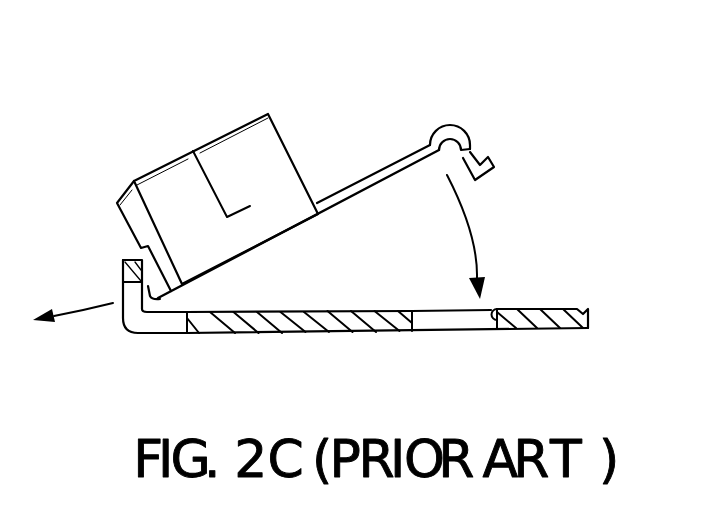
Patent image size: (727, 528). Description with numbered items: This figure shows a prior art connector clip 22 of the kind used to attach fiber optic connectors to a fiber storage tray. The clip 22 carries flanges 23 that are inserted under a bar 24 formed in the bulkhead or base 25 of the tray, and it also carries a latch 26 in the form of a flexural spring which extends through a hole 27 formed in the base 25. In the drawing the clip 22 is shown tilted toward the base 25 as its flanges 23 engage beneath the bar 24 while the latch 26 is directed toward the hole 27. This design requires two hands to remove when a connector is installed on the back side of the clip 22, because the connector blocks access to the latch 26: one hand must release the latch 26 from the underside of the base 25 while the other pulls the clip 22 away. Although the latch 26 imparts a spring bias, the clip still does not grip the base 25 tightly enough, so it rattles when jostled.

The connector clip 22 is at (147, 154).
The flanges 23 is at (160, 299).
The bar 24 is at (123, 262).
The base 25 is at (322, 333).
The latch 26 is at (494, 170).
The hole 27 is at (487, 309).